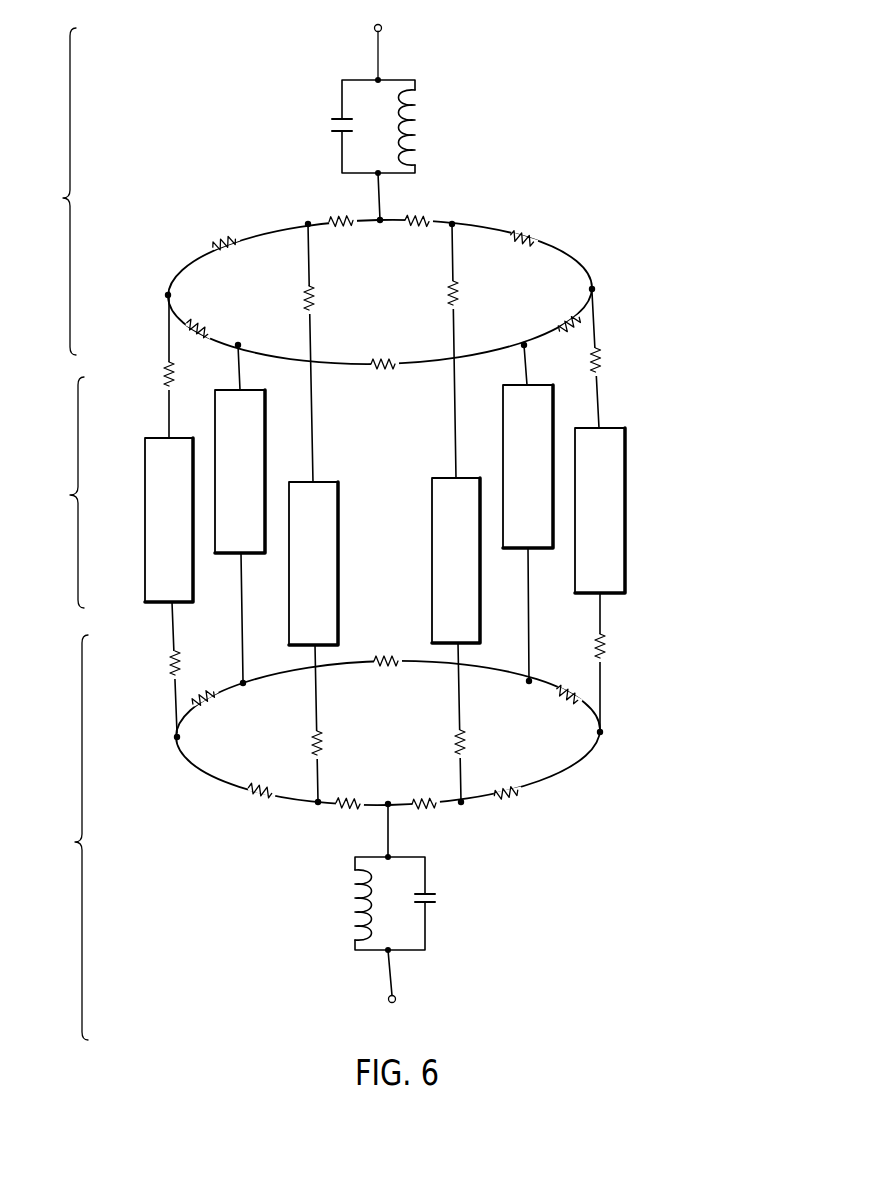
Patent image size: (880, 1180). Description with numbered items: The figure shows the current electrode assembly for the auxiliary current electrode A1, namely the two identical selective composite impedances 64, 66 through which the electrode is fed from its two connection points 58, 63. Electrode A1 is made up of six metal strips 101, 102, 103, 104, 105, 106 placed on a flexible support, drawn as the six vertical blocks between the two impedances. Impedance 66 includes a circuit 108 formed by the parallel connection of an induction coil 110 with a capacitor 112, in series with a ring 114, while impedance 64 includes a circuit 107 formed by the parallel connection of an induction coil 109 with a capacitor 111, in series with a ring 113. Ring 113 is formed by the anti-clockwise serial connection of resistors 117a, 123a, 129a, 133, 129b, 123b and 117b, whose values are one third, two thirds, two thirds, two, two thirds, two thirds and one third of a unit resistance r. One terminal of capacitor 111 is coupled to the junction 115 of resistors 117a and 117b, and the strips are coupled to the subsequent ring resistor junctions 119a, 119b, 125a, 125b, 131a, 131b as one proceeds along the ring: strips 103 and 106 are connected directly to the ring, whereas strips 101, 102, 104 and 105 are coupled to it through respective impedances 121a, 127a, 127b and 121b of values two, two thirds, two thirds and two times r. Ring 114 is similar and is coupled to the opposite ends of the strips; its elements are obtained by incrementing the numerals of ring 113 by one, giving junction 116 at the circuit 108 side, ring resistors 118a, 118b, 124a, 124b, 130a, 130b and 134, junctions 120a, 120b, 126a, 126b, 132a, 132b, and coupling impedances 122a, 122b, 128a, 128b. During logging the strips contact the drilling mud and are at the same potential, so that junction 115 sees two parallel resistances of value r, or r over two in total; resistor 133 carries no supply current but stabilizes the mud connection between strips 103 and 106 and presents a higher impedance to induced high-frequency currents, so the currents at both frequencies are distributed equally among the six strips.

The input terminal 58 is at (382, 29).
The output terminal 63 is at (396, 999).
The selective composite impedance 64 is at (69, 852).
The selective composite impedance 66 is at (57, 212).
The auxiliary current electrode A1 is at (64, 506).
The metal strip 101 is at (472, 566).
The metal strip 102 is at (616, 516).
The metal strip 103 is at (544, 461).
The metal strip 104 is at (329, 566).
The metal strip 105 is at (185, 531).
The metal strip 106 is at (256, 472).
The circuit 107 is at (393, 903).
The circuit 108 is at (398, 128).
The induction coil 109 is at (357, 903).
The induction coil 110 is at (381, 148).
The capacitor 111 is at (434, 898).
The capacitor 112 is at (338, 124).
The ring 113 is at (406, 742).
The ring 114 is at (398, 299).
The junction 115 is at (388, 802).
The junction 116 is at (380, 217).
The resistor 117a is at (426, 807).
The resistor 117b is at (350, 807).
The resistor 118a is at (419, 219).
The resistor 118b is at (343, 219).
The ring resistor junction 119a is at (461, 805).
The ring resistor junction 119b is at (318, 805).
The ring resistor junction 120a is at (453, 221).
The ring resistor junction 120b is at (308, 221).
The impedance 121a is at (465, 745).
The impedance 121b is at (313, 745).
The impedance 122a is at (458, 296).
The impedance 122b is at (304, 300).
The resistor 123a is at (516, 796).
The resistor 123b is at (258, 797).
The resistor 124a is at (524, 236).
The resistor 124b is at (226, 241).
The ring resistor junction 125a is at (602, 733).
The ring resistor junction 125b is at (175, 737).
The ring resistor junction 126a is at (593, 287).
The ring resistor junction 126b is at (168, 292).
The impedance 127a is at (605, 648).
The impedance 127b is at (171, 665).
The impedance 128a is at (600, 362).
The impedance 128b is at (165, 376).
The resistor 129a is at (580, 693).
The resistor 129b is at (196, 702).
The resistor 130a is at (584, 322).
The resistor 130b is at (190, 330).
The ring resistor junction 131a is at (529, 679).
The ring resistor junction 131b is at (243, 682).
The ring resistor junction 132a is at (524, 343).
The ring resistor junction 132b is at (250, 333).
The resistor 133 is at (388, 659).
The resistor 134 is at (388, 363).